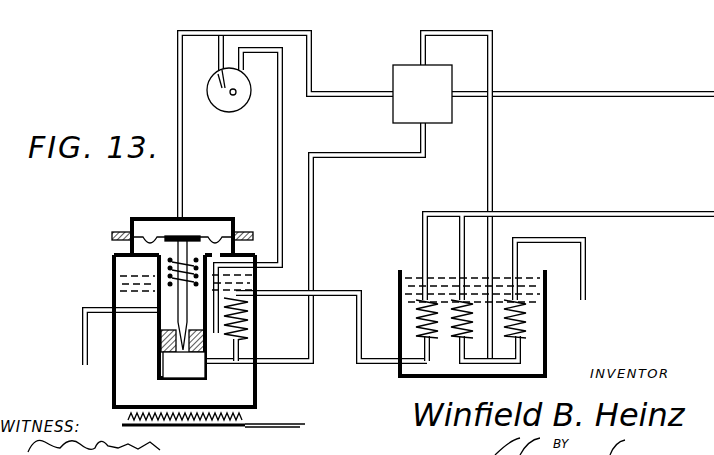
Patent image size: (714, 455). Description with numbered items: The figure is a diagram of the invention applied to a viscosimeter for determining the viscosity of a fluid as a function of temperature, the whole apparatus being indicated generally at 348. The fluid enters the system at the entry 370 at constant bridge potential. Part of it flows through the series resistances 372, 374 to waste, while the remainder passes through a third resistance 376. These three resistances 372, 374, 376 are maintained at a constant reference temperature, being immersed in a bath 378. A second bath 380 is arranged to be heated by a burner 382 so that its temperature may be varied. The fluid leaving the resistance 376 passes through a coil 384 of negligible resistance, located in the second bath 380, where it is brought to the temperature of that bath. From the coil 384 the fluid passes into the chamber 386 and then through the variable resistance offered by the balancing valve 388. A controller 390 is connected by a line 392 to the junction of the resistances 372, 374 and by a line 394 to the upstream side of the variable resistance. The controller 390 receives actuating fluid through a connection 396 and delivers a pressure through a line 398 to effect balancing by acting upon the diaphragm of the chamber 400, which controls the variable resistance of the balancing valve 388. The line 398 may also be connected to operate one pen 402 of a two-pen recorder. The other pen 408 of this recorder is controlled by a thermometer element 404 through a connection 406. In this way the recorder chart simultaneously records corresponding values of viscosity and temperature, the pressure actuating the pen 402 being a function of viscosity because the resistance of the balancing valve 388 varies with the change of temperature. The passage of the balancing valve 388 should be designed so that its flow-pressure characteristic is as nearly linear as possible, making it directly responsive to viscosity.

The apparatus 348 is at (377, 5).
The fluid entry 370 is at (561, 212).
The series resistance 372 is at (460, 298).
The series resistance 374 is at (518, 306).
The third resistance 376 is at (420, 300).
The bath 378 is at (546, 347).
The second bath 380 is at (258, 390).
The burner 382 is at (222, 428).
The coil 384 is at (250, 331).
The chamber 386 is at (164, 367).
The balancing valve 388 is at (178, 332).
The controller 390 is at (433, 118).
The line 392 is at (493, 152).
The line 394 is at (315, 209).
The connection 396 is at (553, 92).
The pressure line 398 is at (313, 68).
The diaphragm chamber 400 is at (207, 228).
The pen 402 is at (212, 82).
The thermometer element 404 is at (226, 298).
The connection 406 is at (279, 141).
The pen 408 is at (235, 89).